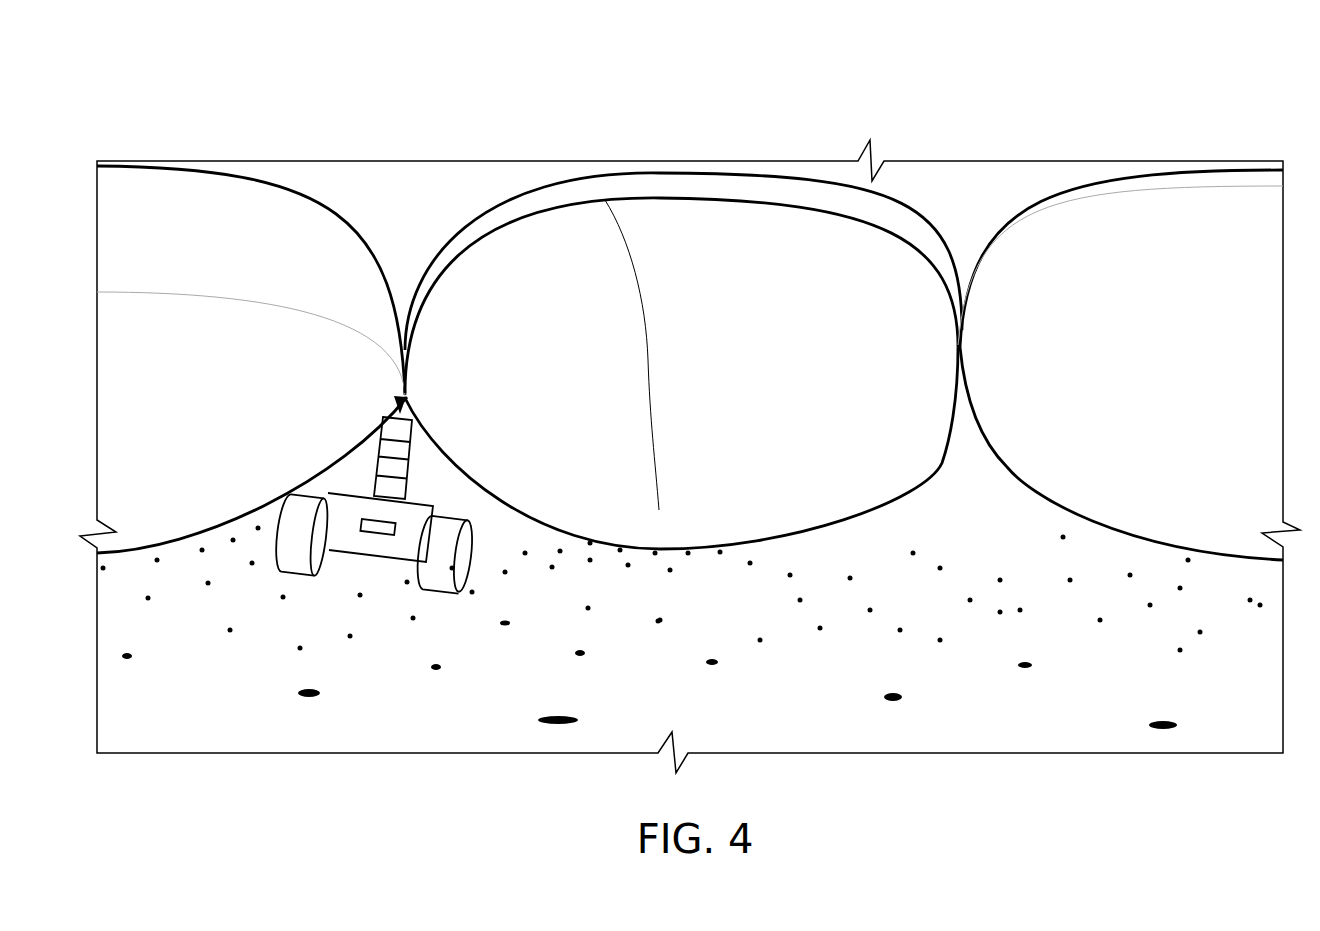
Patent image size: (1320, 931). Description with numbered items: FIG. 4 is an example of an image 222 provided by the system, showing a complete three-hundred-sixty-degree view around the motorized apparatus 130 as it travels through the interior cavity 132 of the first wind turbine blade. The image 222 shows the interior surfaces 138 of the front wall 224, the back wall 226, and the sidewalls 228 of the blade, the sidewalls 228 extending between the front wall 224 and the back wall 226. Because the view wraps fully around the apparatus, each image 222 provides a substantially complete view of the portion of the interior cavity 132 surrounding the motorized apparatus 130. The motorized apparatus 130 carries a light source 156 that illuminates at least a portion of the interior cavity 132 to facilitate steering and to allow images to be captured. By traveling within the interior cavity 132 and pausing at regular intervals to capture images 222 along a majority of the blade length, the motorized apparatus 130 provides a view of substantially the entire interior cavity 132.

The image 222 is at (255, 72).
The front wall 224 is at (133, 347).
The back wall 226 is at (708, 328).
The sidewalls 228 is at (373, 170).
The motorized apparatus 130 is at (399, 333).
The interior cavity 132 is at (960, 330).
The interior surface 138 is at (903, 625).
The light source 156 is at (360, 543).